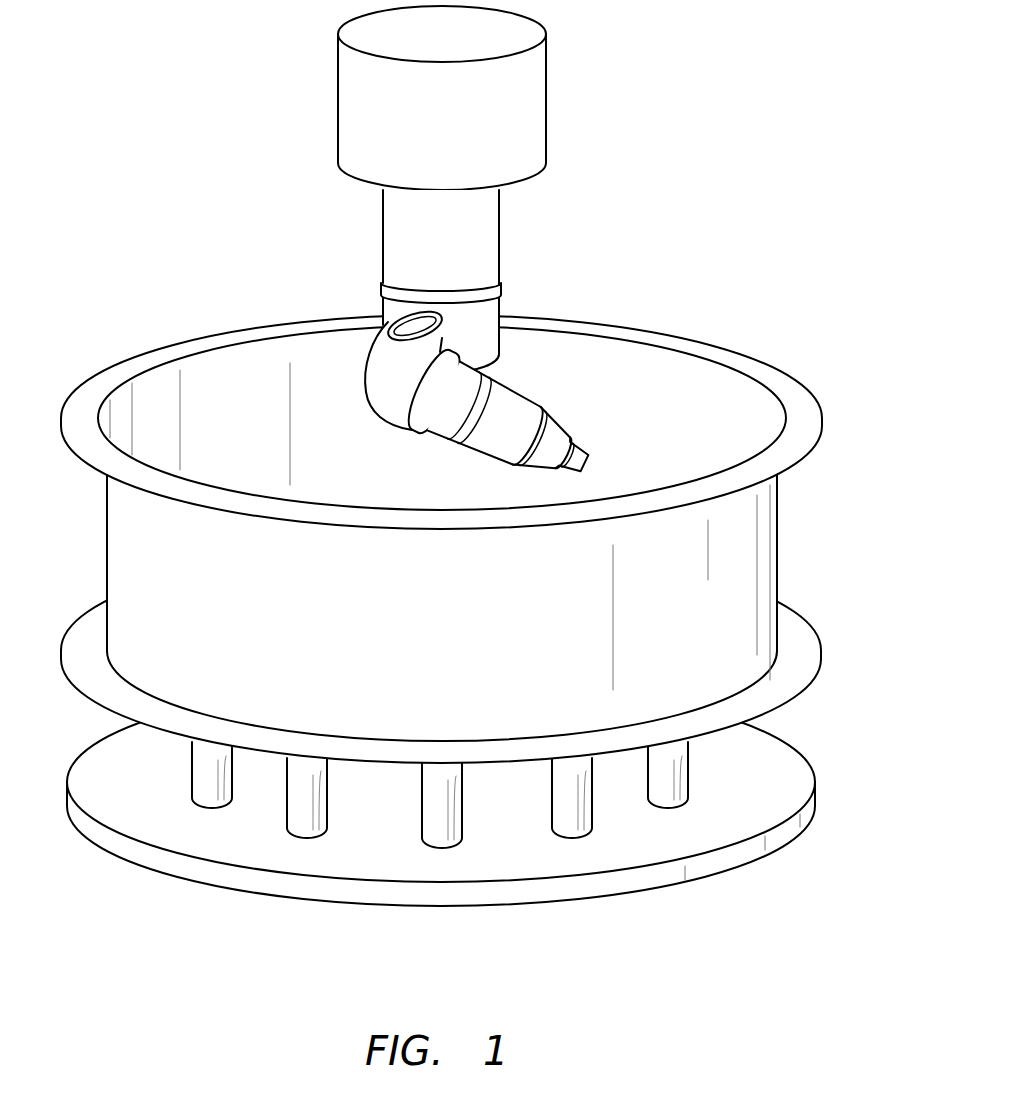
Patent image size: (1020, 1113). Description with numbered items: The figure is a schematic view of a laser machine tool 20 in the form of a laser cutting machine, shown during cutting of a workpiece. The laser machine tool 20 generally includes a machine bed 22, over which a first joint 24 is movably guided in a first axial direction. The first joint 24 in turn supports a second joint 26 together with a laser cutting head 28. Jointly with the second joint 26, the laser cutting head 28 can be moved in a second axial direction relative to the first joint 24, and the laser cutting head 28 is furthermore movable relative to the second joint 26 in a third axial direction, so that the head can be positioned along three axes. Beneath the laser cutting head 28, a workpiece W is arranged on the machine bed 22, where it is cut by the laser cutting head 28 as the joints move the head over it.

The laser machine tool 20 is at (663, 145).
The machine bed 22 is at (800, 781).
The first joint 24 is at (407, 284).
The second joint 26 is at (418, 429).
The laser cutting head 28 is at (533, 404).
The workpiece W is at (757, 517).